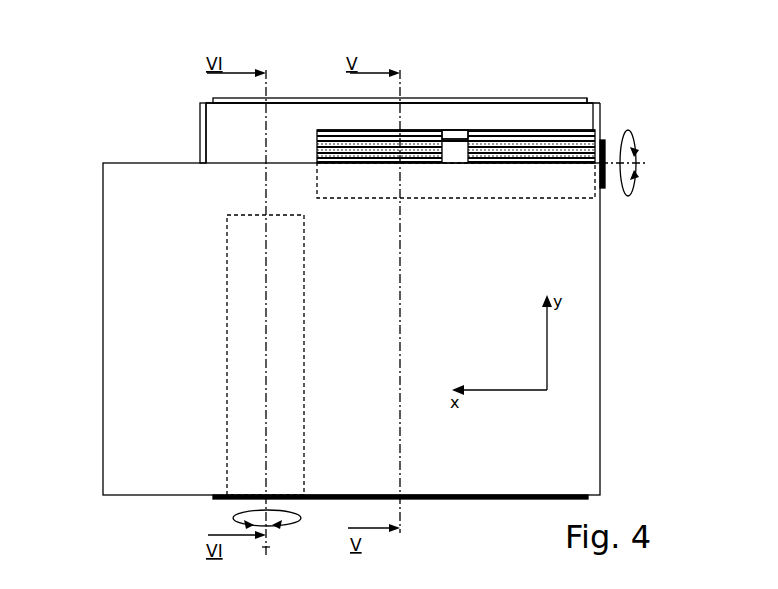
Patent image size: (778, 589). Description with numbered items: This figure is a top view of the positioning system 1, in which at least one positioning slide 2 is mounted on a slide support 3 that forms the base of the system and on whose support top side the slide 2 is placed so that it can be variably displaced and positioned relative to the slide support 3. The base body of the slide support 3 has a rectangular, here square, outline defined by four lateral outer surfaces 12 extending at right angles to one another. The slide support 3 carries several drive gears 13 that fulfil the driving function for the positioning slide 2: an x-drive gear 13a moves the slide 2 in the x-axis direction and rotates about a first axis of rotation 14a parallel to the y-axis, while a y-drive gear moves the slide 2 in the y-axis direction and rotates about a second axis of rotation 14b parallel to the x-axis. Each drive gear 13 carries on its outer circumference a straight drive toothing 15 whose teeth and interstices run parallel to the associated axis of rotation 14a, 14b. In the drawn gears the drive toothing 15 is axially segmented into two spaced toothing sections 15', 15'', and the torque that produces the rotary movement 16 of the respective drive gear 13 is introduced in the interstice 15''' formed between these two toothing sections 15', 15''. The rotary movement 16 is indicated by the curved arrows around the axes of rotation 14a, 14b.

The positioning system 1 is at (618, 88).
The positioning slide 2 is at (100, 465).
The slide support 3 is at (520, 100).
The lateral outer surface 12 is at (192, 134).
The drive gear 13 is at (494, 170).
The x-drive gear 13a is at (218, 462).
The first axis of rotation 14a is at (268, 548).
The second axis of rotation 14b is at (642, 160).
The drive toothing 15 is at (379, 191).
The first toothing section 15' is at (379, 197).
The second toothing section 15'' is at (531, 189).
The interstice 15''' is at (468, 98).
The rotary movement 16 is at (631, 197).